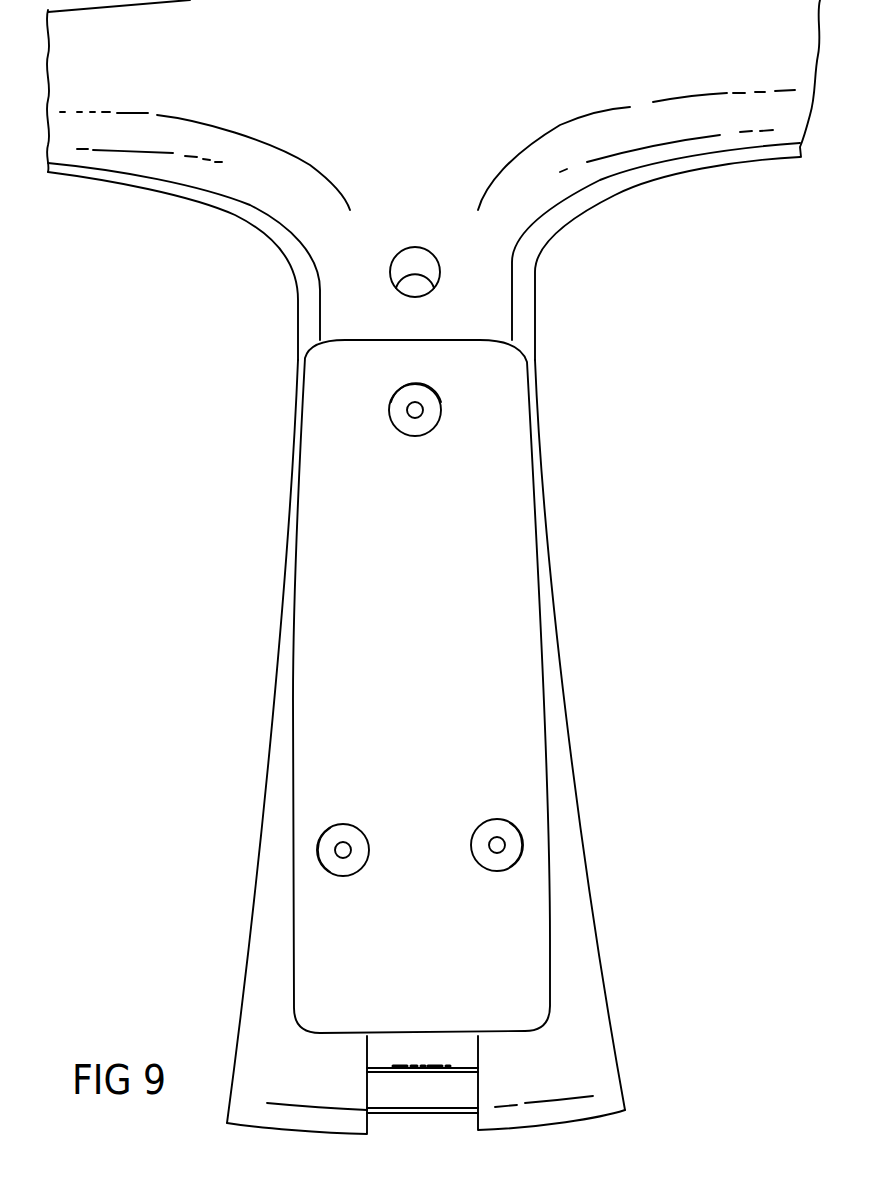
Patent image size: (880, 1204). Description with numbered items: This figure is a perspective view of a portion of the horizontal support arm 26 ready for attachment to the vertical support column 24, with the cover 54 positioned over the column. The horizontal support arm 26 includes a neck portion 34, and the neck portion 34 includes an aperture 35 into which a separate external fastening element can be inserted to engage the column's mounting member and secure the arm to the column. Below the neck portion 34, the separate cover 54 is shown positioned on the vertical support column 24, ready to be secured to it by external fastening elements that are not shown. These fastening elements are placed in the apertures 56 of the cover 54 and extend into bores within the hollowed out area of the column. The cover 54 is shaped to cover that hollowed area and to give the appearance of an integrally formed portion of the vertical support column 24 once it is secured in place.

The vertical support column 24 is at (233, 741).
The horizontal support arm 26 is at (430, 101).
The neck portion 34 is at (358, 291).
The aperture 35 is at (436, 270).
The cover 54 is at (345, 528).
The apertures 56 is at (423, 405).